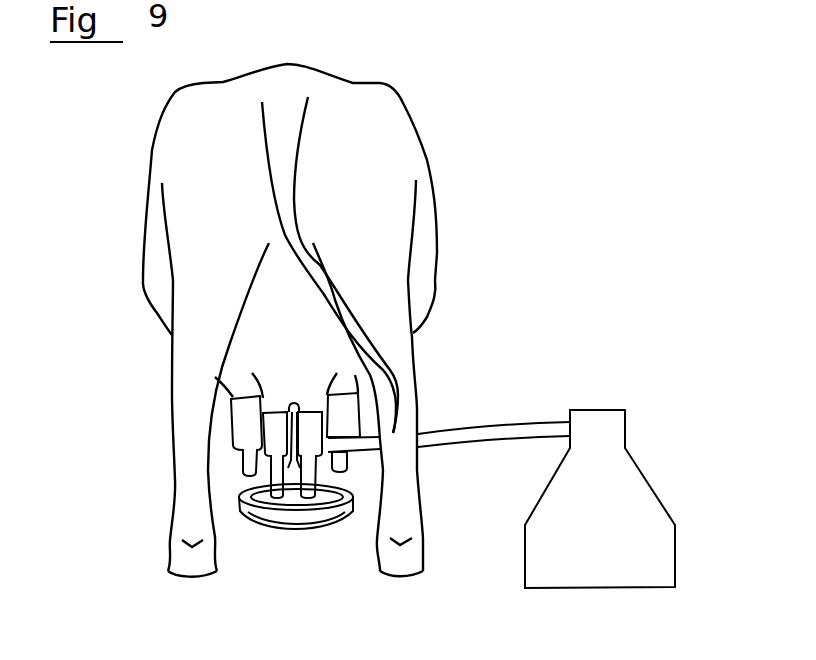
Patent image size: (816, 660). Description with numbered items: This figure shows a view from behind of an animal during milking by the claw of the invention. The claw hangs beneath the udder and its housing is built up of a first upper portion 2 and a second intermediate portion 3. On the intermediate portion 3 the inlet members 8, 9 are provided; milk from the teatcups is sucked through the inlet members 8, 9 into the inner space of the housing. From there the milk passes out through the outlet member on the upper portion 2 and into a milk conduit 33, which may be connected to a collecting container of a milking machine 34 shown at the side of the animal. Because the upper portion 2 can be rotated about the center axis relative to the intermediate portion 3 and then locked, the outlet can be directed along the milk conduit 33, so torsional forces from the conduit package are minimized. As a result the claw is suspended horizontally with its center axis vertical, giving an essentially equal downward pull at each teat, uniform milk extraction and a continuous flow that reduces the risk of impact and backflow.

The first upper portion 2 is at (298, 528).
The second intermediate portion 3 is at (253, 505).
The inlet member 8 is at (243, 467).
The inlet member 9 is at (278, 505).
The milk conduit 33 is at (525, 417).
The milking machine 34 is at (635, 497).